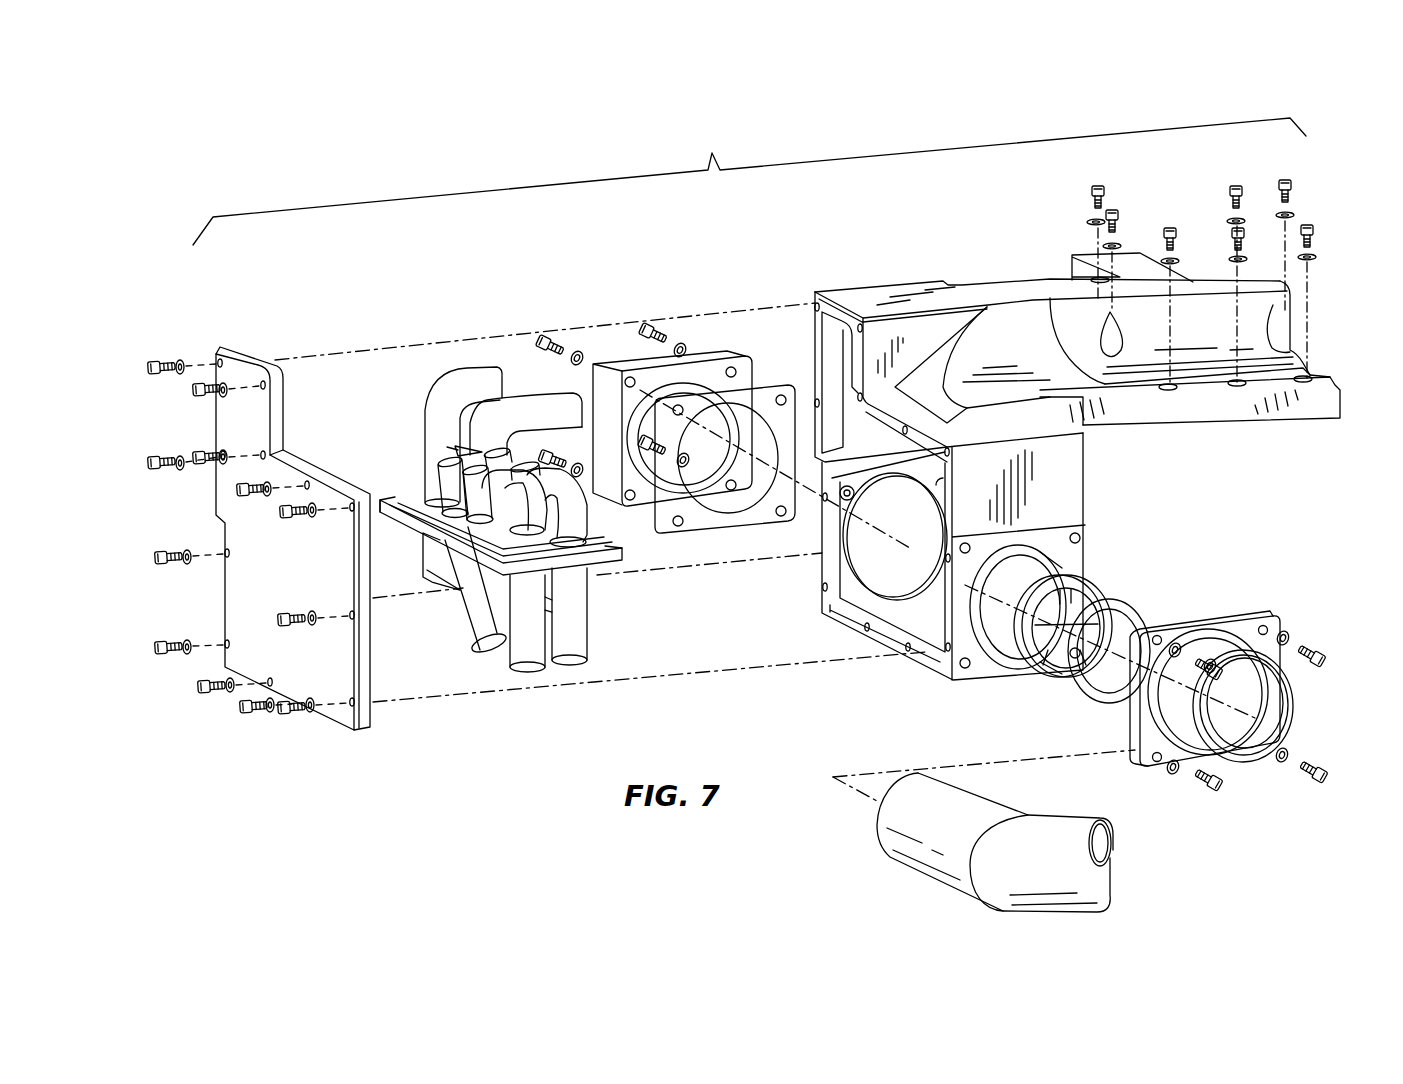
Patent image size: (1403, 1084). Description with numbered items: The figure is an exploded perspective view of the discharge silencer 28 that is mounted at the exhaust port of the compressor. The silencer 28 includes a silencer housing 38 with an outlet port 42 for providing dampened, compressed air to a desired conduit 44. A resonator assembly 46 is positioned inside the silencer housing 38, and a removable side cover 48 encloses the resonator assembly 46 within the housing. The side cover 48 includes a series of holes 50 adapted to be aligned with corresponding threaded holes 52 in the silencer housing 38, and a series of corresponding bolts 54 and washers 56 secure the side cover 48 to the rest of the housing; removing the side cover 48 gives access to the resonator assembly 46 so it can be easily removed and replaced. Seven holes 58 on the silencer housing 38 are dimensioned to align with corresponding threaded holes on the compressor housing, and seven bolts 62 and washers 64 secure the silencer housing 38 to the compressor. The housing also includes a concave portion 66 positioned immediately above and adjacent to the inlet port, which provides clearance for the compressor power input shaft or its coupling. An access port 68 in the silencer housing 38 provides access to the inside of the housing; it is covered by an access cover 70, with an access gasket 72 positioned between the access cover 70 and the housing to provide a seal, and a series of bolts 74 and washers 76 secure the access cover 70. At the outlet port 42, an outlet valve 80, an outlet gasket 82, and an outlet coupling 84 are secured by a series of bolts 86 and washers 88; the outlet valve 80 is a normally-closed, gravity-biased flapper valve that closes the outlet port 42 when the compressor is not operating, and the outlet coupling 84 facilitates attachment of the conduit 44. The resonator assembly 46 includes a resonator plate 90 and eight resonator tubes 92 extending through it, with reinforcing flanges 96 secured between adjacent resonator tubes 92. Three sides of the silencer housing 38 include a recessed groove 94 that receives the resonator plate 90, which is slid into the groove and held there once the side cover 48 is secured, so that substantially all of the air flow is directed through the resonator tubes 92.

The silencer 28 is at (749, 181).
The silencer housing 38 is at (1000, 290).
The outlet port 42 is at (985, 665).
The conduit 44 is at (1053, 822).
The resonator assembly 46 is at (397, 373).
The side cover 48 is at (343, 725).
The holes 50 is at (227, 550).
The threaded holes 52 is at (840, 620).
The bolts 54 is at (162, 654).
The washers 56 is at (187, 641).
The holes 58 is at (1310, 377).
The bolts 62 is at (1285, 185).
The washers 64 is at (1296, 214).
The concave portion 66 is at (1255, 322).
The access port 68 is at (855, 558).
The access cover 70 is at (710, 350).
The access gasket 72 is at (768, 385).
The bolts 74 is at (550, 338).
The washers 76 is at (578, 350).
The outlet valve 80 is at (1095, 583).
The outlet gasket 82 is at (1150, 608).
The outlet coupling 84 is at (1235, 620).
The bolts 86 is at (1312, 766).
The washers 88 is at (1290, 746).
The resonator plate 90 is at (612, 562).
The resonator tubes 92 is at (600, 625).
The recessed groove 94 is at (882, 503).
The reinforcing flanges 96 is at (433, 580).